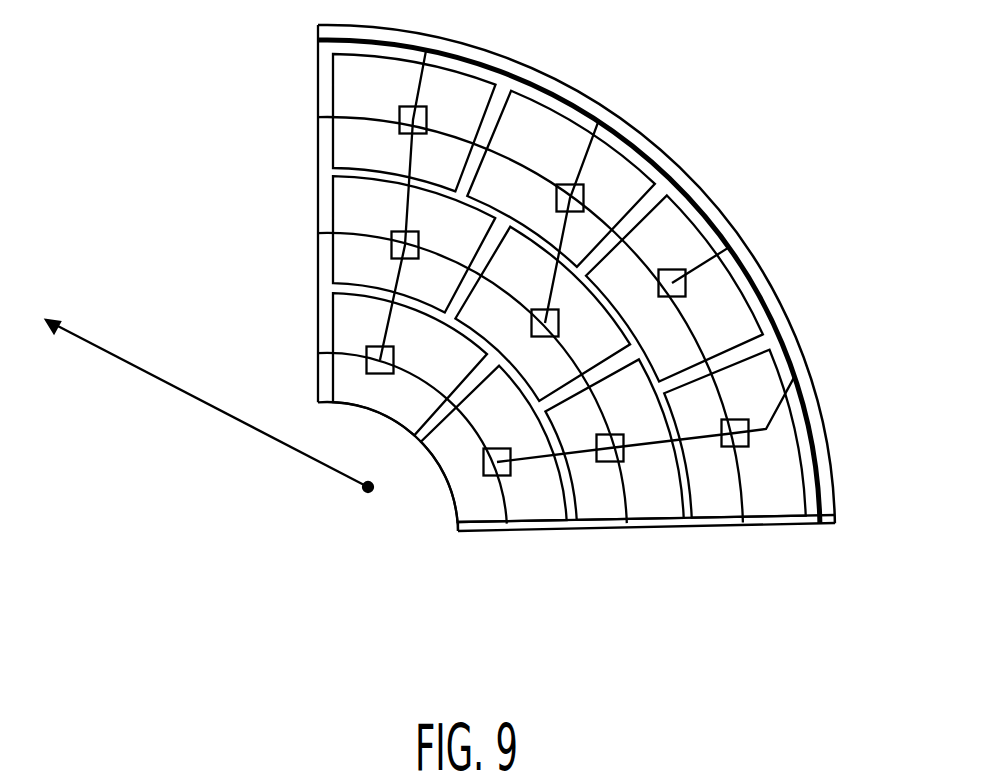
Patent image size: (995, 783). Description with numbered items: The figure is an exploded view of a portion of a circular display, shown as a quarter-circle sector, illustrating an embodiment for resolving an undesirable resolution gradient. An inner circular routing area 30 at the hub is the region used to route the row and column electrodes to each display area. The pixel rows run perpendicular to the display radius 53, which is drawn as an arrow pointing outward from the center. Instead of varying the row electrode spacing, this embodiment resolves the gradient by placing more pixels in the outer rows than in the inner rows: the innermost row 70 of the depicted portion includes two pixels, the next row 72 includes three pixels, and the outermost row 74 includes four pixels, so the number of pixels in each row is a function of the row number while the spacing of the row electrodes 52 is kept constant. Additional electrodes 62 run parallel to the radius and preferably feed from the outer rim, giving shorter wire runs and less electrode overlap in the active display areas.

The inner circular routing area 30 is at (693, 197).
The row electrodes 52 is at (503, 526).
The display radius 53 is at (207, 403).
The additional electrodes 62 is at (420, 88).
The innermost row 70 is at (535, 547).
The next row 72 is at (661, 571).
The outermost row 74 is at (778, 600).